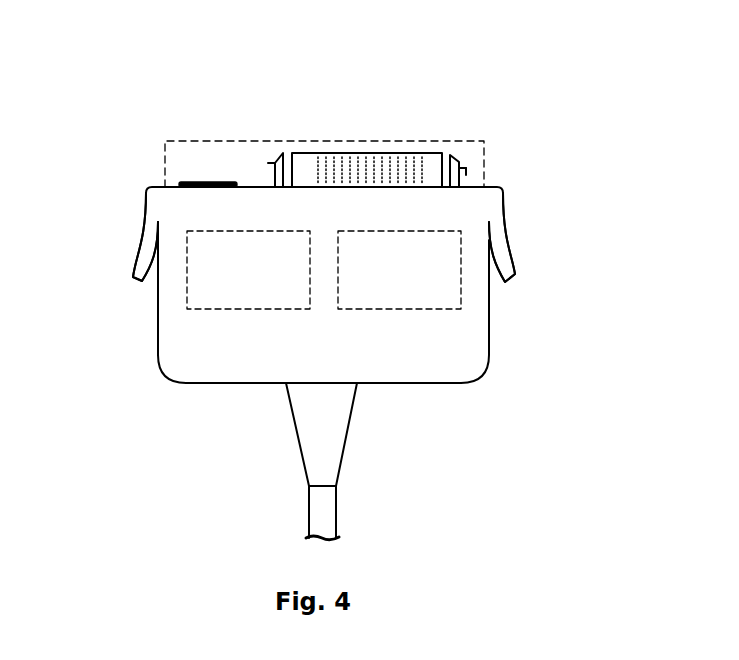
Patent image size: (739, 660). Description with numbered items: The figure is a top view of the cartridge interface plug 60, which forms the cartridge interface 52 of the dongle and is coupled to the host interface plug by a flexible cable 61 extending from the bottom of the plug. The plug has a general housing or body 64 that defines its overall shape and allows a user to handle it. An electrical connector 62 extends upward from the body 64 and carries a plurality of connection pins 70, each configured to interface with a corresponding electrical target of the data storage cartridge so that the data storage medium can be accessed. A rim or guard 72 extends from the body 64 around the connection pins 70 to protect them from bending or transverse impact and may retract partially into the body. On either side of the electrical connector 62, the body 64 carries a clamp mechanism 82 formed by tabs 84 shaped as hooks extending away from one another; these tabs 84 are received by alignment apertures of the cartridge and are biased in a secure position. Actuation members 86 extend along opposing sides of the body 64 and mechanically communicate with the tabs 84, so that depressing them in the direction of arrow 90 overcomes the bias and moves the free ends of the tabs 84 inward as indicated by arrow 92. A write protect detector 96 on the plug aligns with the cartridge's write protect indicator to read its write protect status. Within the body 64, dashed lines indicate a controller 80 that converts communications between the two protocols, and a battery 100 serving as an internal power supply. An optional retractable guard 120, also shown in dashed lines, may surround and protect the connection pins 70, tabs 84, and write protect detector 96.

The cartridge interface 52 is at (434, 375).
The cartridge interface plug 60 is at (453, 206).
The flexible cable 61 is at (323, 508).
The electrical connector 62 is at (342, 151).
The body 64 is at (167, 302).
The connection pins 70 is at (405, 157).
The guard 72 is at (433, 160).
The controller 80 is at (436, 309).
The clamp mechanism 82 is at (468, 160).
The tabs 84 is at (281, 151).
The actuation members 86 is at (140, 260).
The arrow 90 is at (128, 263).
The arrow 92 is at (268, 160).
The write protect detector 96 is at (206, 184).
The battery 100 is at (213, 309).
The retractable guard 120 is at (193, 139).